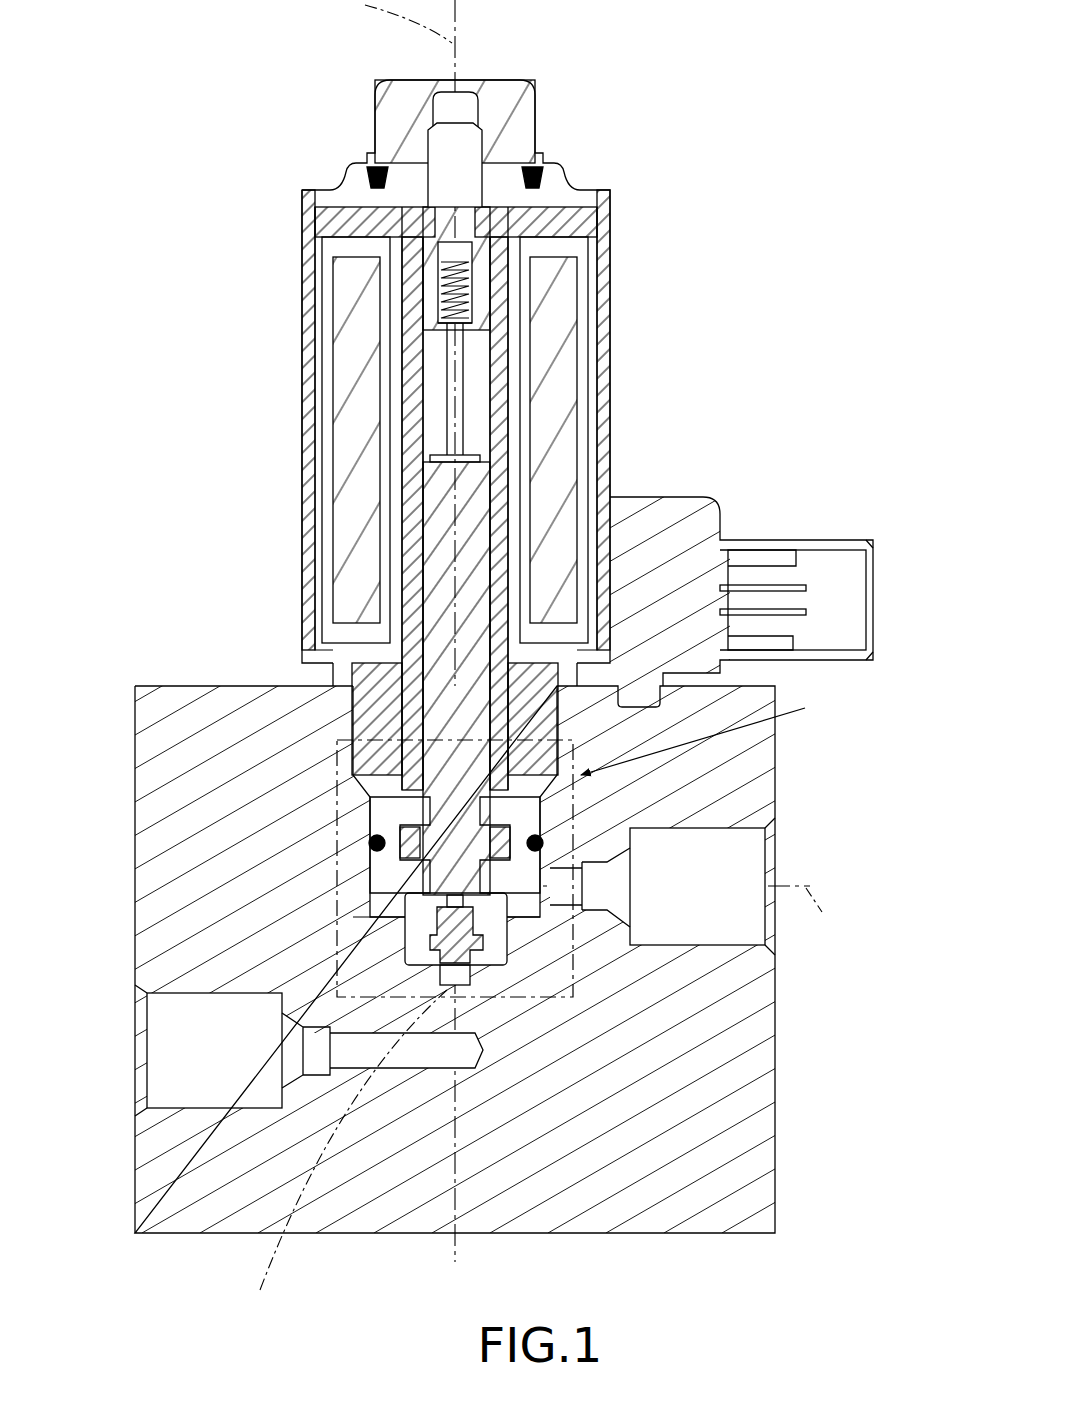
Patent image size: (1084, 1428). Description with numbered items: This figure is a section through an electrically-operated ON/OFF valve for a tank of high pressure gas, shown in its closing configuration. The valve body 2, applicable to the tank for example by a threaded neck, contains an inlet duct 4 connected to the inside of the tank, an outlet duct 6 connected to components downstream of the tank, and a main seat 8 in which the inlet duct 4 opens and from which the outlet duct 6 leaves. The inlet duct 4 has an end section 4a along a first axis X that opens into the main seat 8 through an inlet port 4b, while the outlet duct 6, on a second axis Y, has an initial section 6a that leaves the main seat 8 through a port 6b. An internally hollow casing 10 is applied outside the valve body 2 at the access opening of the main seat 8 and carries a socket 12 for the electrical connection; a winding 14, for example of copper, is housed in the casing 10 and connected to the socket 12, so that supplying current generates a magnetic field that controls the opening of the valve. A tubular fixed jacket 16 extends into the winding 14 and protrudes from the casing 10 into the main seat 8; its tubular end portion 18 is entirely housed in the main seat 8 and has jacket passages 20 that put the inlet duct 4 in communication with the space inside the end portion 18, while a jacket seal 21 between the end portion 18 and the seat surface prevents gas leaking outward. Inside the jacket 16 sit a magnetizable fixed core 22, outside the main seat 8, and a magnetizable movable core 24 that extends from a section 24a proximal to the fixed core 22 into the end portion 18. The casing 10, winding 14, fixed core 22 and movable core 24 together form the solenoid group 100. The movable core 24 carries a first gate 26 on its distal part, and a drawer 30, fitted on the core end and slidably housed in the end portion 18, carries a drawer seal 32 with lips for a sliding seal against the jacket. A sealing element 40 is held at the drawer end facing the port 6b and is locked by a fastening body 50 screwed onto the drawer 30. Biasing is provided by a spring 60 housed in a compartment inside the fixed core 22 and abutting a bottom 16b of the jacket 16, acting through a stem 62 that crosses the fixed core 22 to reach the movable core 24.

The solenoid group 100 is at (878, 85).
The valve body 2 is at (160, 715).
The inlet duct 4 is at (735, 928).
The end section 4a is at (567, 882).
The inlet port 4b is at (549, 894).
The outlet duct 6 is at (171, 1076).
The initial section 6a is at (447, 1032).
The port 6b is at (344, 1157).
The main seat 8 is at (357, 882).
The casing 10 is at (615, 237).
The socket 12 is at (818, 595).
The winding 14 is at (352, 361).
The fixed jacket 16 is at (499, 446).
The bottom 16b is at (467, 230).
The tubular end portion 18 is at (396, 788).
The jacket passages 20 is at (523, 897).
The jacket seal 21 is at (417, 879).
The fixed core 22 is at (481, 366).
The movable core 24 is at (438, 539).
The section 24a is at (445, 487).
The first gate 26 is at (447, 982).
The drawer 30 is at (417, 948).
The drawer seal 32 is at (503, 834).
The sealing element 40 is at (450, 899).
The fastening body 50 is at (493, 955).
The spring 60 is at (436, 306).
The stem 62 is at (429, 270).